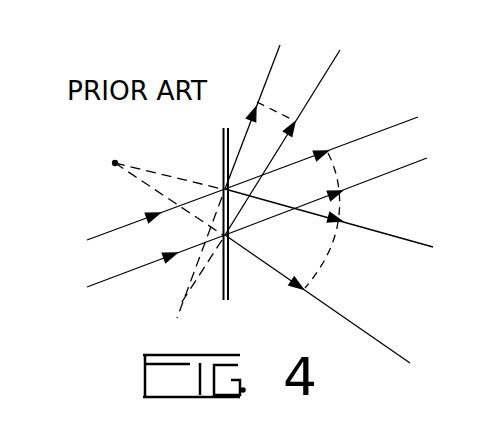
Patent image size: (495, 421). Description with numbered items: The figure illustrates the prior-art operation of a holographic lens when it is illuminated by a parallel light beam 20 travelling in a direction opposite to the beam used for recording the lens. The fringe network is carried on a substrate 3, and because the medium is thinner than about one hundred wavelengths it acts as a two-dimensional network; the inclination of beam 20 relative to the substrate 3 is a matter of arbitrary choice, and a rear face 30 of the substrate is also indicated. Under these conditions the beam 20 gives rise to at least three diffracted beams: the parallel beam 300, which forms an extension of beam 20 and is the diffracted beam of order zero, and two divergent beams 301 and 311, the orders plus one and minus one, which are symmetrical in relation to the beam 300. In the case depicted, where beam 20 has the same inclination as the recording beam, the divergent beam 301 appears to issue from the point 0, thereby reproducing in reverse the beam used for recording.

The point 0 is at (113, 160).
The substrate 3 is at (227, 214).
The parallel light beam 20 is at (136, 253).
The rear surface of plate 30 is at (228, 208).
The parallel beam 300 is at (363, 157).
The divergent beam 301 is at (365, 248).
The divergent beam 311 is at (308, 73).